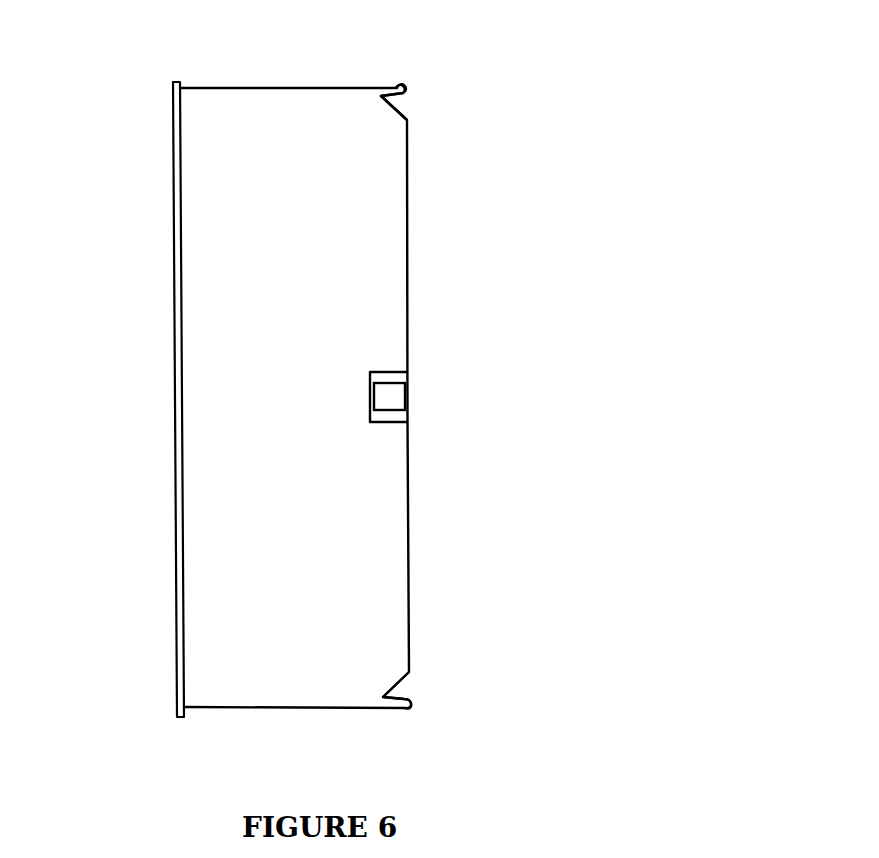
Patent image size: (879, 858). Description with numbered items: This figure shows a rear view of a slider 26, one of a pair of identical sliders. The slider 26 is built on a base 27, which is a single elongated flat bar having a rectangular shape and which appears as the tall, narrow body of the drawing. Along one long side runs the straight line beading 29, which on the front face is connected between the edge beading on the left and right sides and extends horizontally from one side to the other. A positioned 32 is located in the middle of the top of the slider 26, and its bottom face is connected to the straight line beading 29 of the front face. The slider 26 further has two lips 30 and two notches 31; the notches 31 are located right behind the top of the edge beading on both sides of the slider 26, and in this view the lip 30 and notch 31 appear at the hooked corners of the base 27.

The slider 26 is at (288, 376).
The base 27 is at (372, 248).
The straight line beading 29 is at (168, 453).
The lips 30 is at (412, 713).
The notches 31 is at (402, 102).
The positioned 32 is at (393, 397).